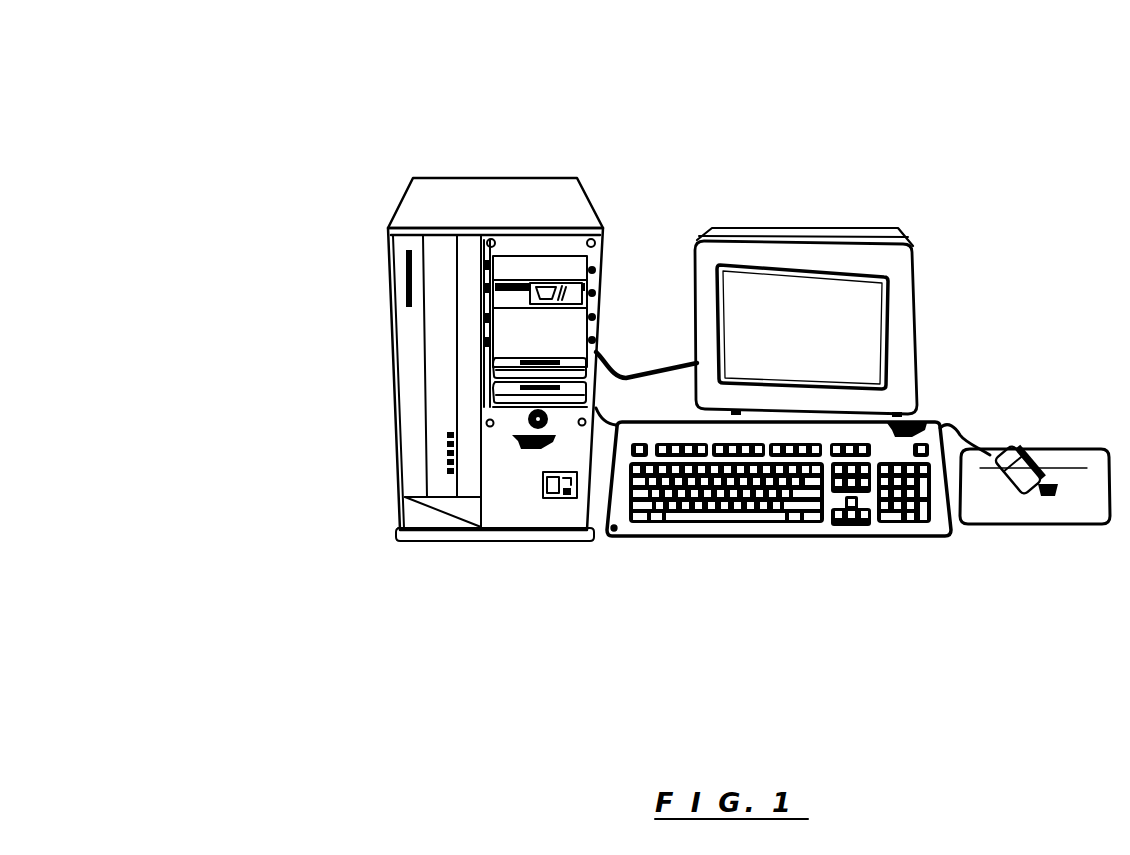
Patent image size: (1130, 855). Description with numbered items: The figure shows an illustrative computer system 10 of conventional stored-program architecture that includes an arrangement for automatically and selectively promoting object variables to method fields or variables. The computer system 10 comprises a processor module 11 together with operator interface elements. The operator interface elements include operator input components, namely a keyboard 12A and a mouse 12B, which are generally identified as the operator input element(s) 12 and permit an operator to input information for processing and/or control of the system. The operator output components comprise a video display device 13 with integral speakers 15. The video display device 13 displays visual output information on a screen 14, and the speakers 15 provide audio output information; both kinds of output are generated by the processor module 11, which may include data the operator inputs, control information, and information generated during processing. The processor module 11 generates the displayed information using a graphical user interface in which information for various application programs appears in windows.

The computer system 10 is at (326, 103).
The processor module 11 is at (505, 176).
The operator input element(s) 12 is at (940, 584).
The keyboard 12A is at (820, 543).
The mouse 12B is at (1090, 534).
The video display device 13 is at (923, 328).
The screen 14 is at (732, 301).
The speakers 15 is at (389, 376).